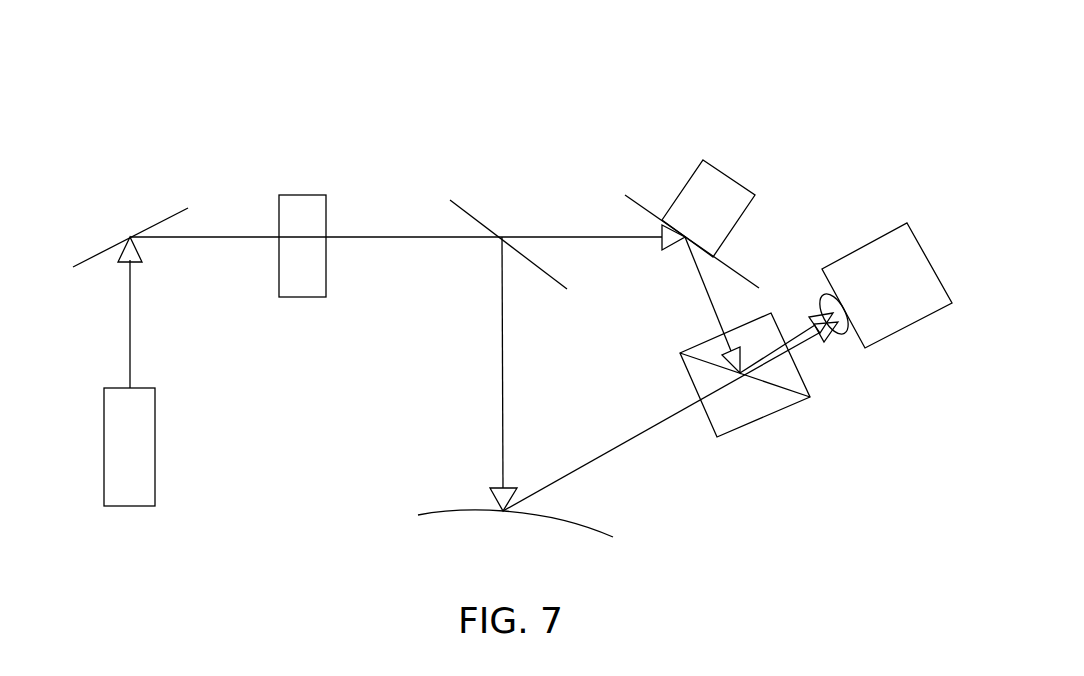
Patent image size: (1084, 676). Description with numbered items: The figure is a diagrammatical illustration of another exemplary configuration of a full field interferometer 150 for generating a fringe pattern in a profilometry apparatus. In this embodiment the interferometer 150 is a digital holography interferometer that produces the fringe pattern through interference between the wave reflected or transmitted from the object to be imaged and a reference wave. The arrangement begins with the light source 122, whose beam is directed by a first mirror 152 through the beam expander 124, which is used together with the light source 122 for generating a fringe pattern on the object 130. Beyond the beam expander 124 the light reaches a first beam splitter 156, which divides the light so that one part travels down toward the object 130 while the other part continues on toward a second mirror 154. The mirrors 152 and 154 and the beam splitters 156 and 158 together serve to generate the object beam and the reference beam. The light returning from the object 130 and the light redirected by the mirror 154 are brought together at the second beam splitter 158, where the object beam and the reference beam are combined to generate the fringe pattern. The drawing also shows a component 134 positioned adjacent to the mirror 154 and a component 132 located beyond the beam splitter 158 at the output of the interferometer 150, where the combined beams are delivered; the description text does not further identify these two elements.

The digital holography interferometer 150 is at (250, 64).
The light source 122 is at (157, 460).
The mirror 152 is at (155, 220).
The beam expander 124 is at (302, 195).
The beam splitter 156 is at (475, 215).
The mirror 154 is at (735, 267).
The detector 134 is at (730, 175).
The object 130 is at (443, 510).
The beam splitter 158 is at (765, 417).
The detector / camera 132 is at (910, 327).